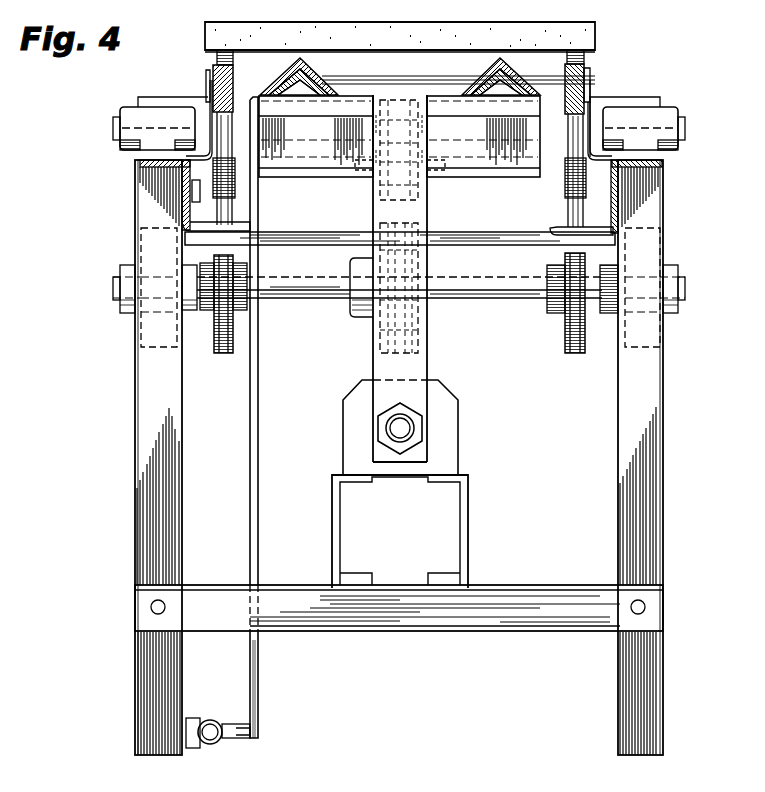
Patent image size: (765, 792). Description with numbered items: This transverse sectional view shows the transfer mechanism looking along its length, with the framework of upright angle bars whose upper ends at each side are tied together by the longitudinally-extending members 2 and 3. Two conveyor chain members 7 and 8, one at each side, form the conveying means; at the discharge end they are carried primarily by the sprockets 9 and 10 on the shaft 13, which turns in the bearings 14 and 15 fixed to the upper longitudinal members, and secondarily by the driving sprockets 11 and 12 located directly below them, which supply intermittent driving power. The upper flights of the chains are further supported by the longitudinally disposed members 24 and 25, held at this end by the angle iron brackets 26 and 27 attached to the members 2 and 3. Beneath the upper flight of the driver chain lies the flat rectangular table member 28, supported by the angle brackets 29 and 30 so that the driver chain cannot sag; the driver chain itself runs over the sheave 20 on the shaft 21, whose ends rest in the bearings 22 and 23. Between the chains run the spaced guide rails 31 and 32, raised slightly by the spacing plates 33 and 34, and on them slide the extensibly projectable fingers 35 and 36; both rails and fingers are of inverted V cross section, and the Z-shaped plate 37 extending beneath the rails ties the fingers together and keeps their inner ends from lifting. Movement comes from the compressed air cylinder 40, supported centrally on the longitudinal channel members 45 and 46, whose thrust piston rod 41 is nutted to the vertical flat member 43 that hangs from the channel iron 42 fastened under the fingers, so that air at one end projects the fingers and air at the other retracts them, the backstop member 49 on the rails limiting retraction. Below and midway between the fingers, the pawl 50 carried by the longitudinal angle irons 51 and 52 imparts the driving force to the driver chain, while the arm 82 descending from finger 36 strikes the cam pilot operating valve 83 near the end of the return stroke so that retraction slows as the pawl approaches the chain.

The longitudinally-extending member 2 is at (635, 167).
The longitudinally-extending member 3 is at (150, 163).
The chain member 7 is at (587, 58).
The chain member 8 is at (213, 58).
The sprocket 9 is at (568, 190).
The sprocket 10 is at (192, 183).
The driving sprocket 11 is at (563, 338).
The driving sprocket 12 is at (214, 340).
The shaft 13 is at (113, 128).
The bearing 14 is at (128, 108).
The bearing 15 is at (672, 108).
The sheave 20 is at (378, 335).
The shaft 21 is at (304, 300).
The bearing 22 is at (673, 267).
The bearing 23 is at (128, 265).
The longitudinally disposed member 24 is at (589, 76).
The longitudinally disposed member 25 is at (212, 78).
The angle iron bracket 26 is at (594, 108).
The angle iron bracket 27 is at (206, 102).
The table member 28 is at (348, 236).
The angle bracket 29 is at (607, 203).
The angle bracket 30 is at (185, 200).
The guide rail 31 is at (525, 84).
The guide rail 32 is at (310, 84).
The spacing plate 33 is at (510, 92).
The spacing plate 34 is at (300, 90).
The projectable finger 35 is at (512, 70).
The projectable finger 36 is at (290, 63).
The Z-shaped plate 37 is at (505, 160).
The compressed air cylinder 40 is at (452, 418).
The thrust piston rod 41 is at (388, 426).
The channel iron 42 is at (300, 116).
The vertical member 43 is at (428, 360).
The channel member 45 is at (462, 515).
The channel member 46 is at (340, 508).
The backstop member 49 is at (400, 78).
The pawl 50 is at (410, 200).
The angle iron 51 is at (432, 166).
The angle iron 52 is at (362, 168).
The arm 82 is at (250, 505).
The cam pilot operating valve 83 is at (210, 720).